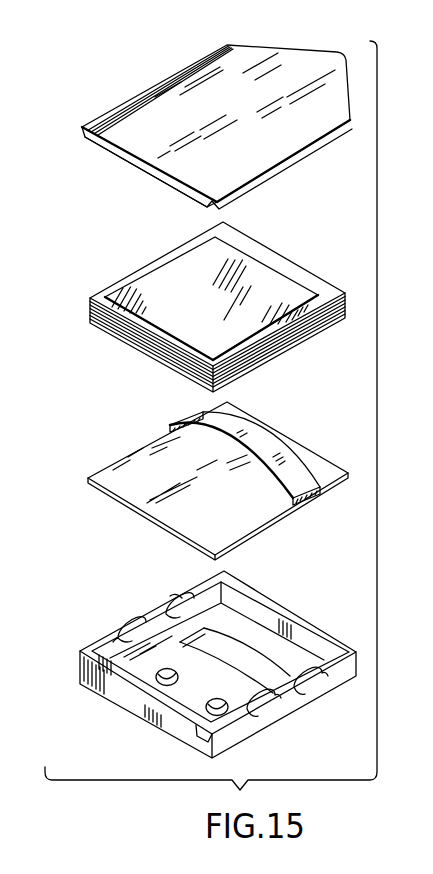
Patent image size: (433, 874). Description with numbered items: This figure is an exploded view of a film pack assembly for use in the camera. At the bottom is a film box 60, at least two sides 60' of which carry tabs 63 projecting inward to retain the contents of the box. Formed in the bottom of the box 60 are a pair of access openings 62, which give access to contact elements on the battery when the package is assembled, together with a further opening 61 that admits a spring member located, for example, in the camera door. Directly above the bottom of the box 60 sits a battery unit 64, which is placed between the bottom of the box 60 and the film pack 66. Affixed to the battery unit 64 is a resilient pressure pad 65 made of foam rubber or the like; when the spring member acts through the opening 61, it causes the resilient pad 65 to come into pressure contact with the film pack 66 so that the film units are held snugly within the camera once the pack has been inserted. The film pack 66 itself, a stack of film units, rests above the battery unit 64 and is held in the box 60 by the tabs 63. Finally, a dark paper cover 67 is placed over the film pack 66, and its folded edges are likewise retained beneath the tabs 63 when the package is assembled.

The film box 60 is at (208, 664).
The sides of the film box 60' is at (208, 659).
The opening in the bottom of the box 61 is at (246, 640).
The access openings 62 is at (223, 698).
The tabs 63 is at (170, 596).
The battery unit 64 is at (132, 452).
The resilient pressure pad 65 is at (187, 421).
The film pack 66 is at (90, 323).
The dark paper cover 67 is at (281, 58).